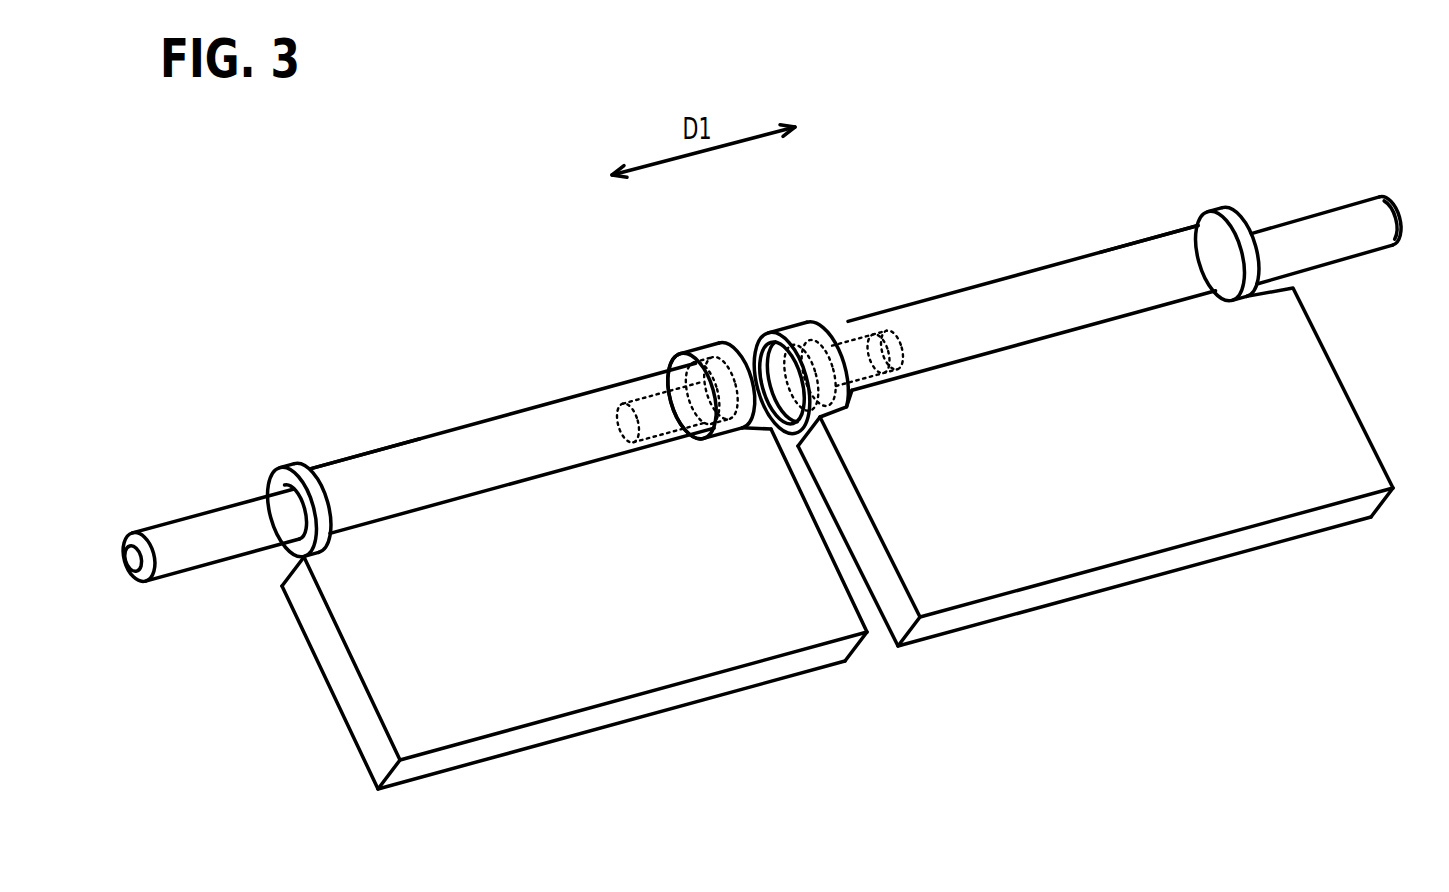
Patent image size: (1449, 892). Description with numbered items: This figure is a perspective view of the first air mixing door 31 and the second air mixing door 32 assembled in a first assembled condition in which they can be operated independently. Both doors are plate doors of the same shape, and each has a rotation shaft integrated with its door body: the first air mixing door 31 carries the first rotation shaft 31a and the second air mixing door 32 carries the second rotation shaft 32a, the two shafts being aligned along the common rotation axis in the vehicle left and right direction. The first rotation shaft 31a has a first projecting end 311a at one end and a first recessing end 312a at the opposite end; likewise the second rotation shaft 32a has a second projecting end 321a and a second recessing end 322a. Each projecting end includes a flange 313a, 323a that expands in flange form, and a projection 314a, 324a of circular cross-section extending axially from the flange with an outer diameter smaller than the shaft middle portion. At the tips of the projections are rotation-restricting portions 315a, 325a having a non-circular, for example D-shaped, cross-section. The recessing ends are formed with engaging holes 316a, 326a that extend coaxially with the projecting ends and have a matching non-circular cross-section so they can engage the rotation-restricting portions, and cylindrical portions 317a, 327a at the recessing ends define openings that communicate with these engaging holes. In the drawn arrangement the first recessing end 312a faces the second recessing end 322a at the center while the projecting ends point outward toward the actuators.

The first air mixing door 31 is at (663, 716).
The second air mixing door 32 is at (1143, 590).
The first rotation shaft 31a is at (468, 425).
The second rotation shaft 32a is at (1047, 265).
The first projecting end 311a is at (316, 466).
The first recessing end 312a is at (658, 348).
The flange 313a is at (288, 465).
The projection 314a is at (213, 512).
The rotation-restricting portion 315a is at (188, 577).
The engaging hole 316a is at (633, 378).
The cylindrical portion 317a is at (718, 348).
The second projecting end 321a is at (1152, 237).
The second recessing end 322a is at (845, 313).
The flange 323a is at (1210, 216).
The projection 324a is at (1300, 218).
The rotation-restricting portion 325a is at (1357, 257).
The engaging hole 326a is at (877, 322).
The cylindrical portion 327a is at (793, 323).